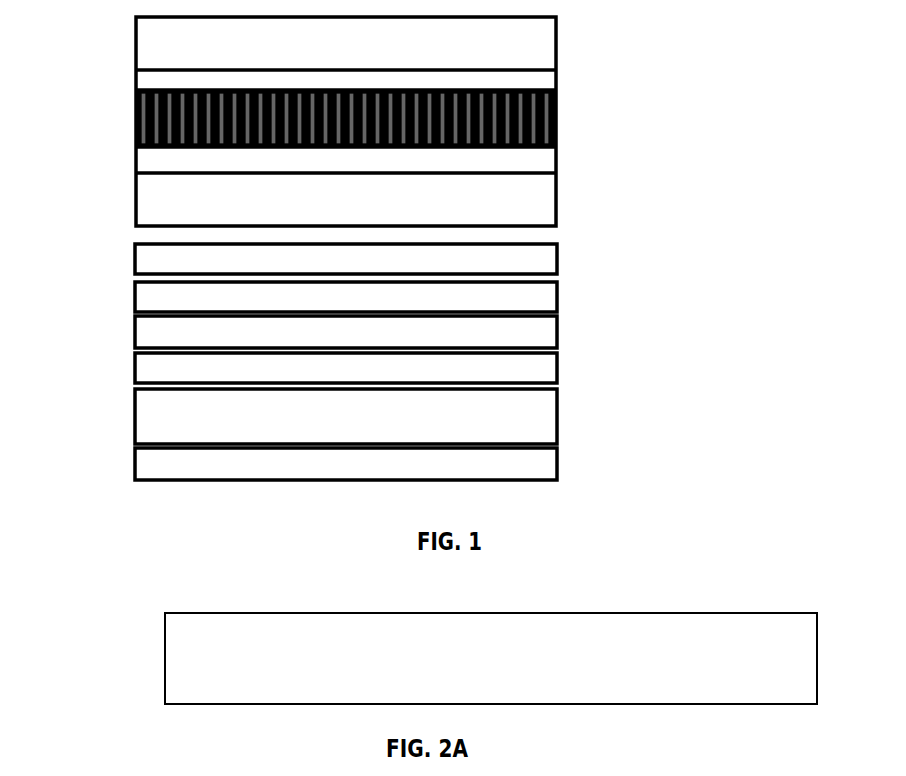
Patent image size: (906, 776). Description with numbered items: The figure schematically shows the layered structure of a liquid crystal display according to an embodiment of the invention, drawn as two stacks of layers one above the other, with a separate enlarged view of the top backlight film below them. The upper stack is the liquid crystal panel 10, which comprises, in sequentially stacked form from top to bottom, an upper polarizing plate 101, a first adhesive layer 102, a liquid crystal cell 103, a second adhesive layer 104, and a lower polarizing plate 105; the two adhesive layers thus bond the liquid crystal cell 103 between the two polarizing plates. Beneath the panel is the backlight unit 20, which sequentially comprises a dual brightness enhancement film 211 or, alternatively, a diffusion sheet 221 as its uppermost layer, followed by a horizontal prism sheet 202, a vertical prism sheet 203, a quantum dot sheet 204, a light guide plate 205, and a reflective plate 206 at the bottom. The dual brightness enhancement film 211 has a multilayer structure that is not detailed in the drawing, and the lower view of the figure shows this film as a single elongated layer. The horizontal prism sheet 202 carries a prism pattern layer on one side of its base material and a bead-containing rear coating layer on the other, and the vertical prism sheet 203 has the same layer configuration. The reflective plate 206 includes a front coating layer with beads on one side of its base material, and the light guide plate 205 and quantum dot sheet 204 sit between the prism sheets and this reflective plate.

In FIG. 1, the liquid crystal panel 10 is at (384, 124).
In FIG. 1, the upper polarizing plate 101 is at (556, 35).
In FIG. 1, the first adhesive layer 102 is at (556, 78).
In FIG. 1, the liquid crystal cell 103 is at (556, 120).
In FIG. 1, the second adhesive layer 104 is at (556, 157).
In FIG. 1, the lower polarizing plate 105 is at (556, 194).
In FIG. 1, the backlight unit 20 is at (427, 372).
In FIG. 1, the dual brightness enhancement film 211 is at (470, 269).
In FIG. 2A, the dual brightness enhancement film 211 is at (145, 612).
In FIG. 1, the diffusion sheet 221 is at (557, 258).
In FIG. 1, the horizontal prism sheet 202 is at (557, 297).
In FIG. 1, the vertical prism sheet 203 is at (557, 331).
In FIG. 1, the quantum dot sheet 204 is at (557, 370).
In FIG. 1, the light guide plate 205 is at (557, 415).
In FIG. 1, the reflective plate 206 is at (557, 463).